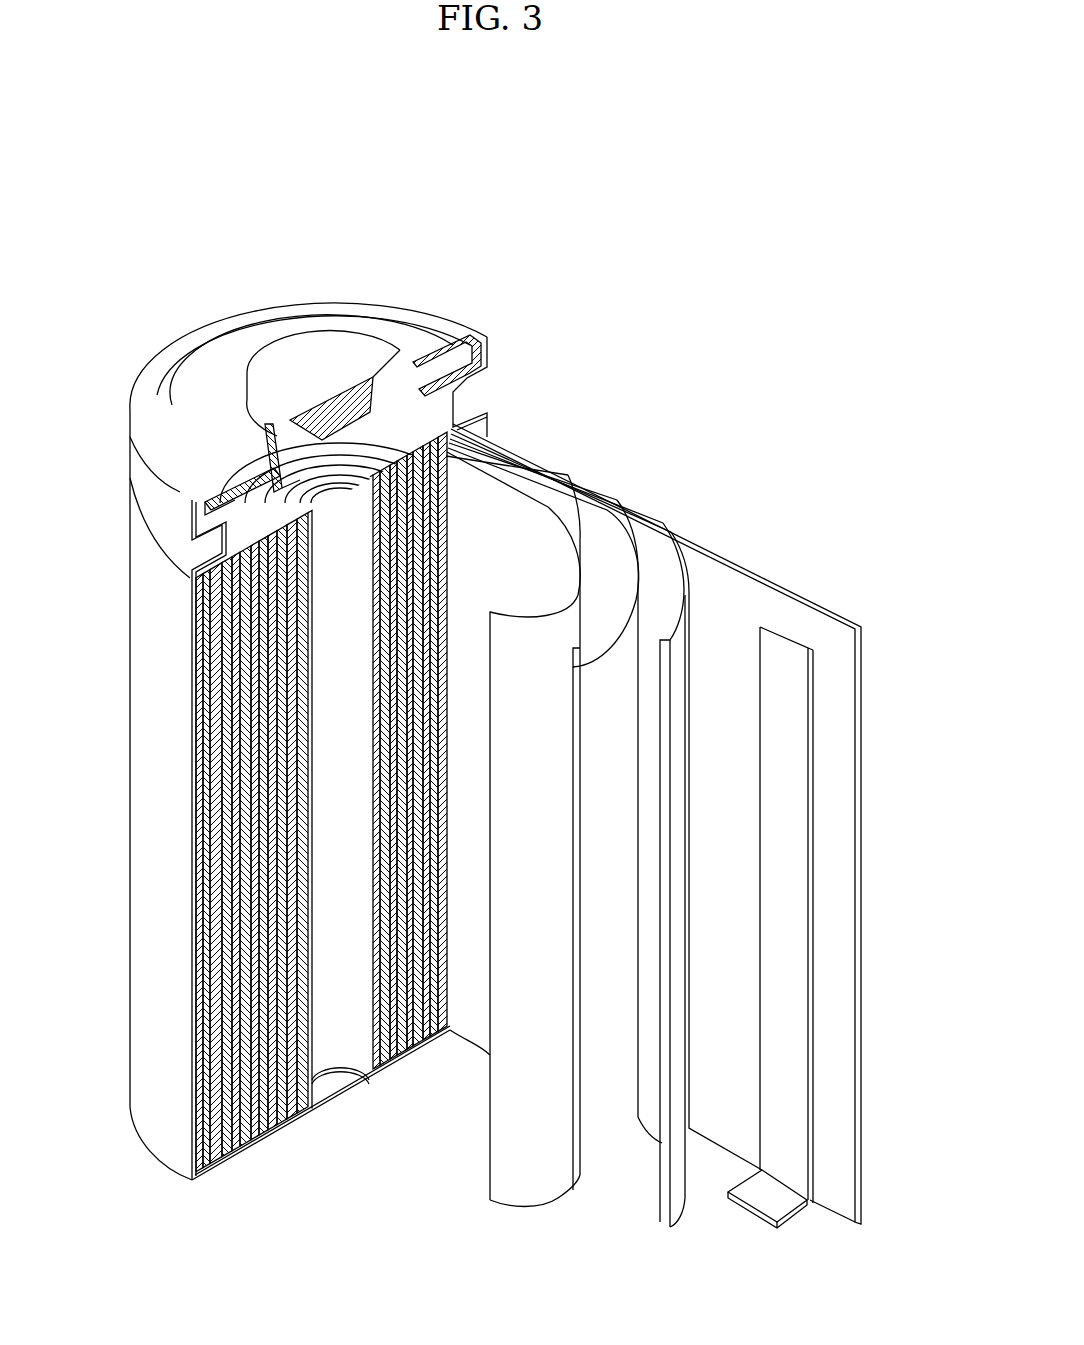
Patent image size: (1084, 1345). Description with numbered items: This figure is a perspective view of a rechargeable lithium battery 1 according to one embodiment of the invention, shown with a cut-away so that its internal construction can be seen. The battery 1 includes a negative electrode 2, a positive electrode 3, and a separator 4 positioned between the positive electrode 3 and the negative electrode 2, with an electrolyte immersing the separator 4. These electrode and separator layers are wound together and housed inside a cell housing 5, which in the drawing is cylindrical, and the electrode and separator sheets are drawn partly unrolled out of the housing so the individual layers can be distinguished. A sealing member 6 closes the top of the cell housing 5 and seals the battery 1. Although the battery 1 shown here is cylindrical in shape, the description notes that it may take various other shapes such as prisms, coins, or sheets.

The rechargeable lithium battery 1 is at (485, 229).
The negative electrode 2 is at (853, 887).
The positive electrode 3 is at (548, 505).
The separator 4 is at (608, 547).
The cell housing 5 is at (141, 810).
The sealing member 6 is at (325, 345).